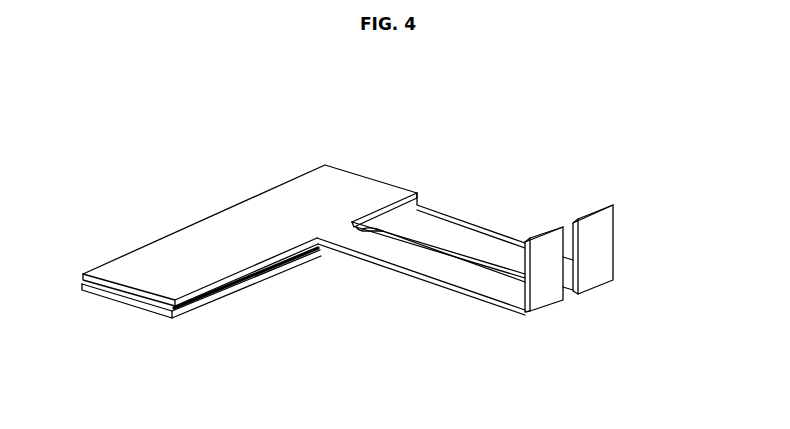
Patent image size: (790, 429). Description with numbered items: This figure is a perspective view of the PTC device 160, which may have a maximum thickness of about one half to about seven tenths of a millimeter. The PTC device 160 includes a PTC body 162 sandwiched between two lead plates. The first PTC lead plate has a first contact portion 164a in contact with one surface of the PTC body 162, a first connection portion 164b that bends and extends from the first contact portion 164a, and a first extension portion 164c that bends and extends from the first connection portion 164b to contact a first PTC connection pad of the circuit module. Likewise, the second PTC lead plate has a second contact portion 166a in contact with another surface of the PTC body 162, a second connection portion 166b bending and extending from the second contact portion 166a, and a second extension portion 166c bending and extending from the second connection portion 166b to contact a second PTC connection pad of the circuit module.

The PTC device 160 is at (597, 195).
The PTC body 162 is at (132, 298).
The first contact portion 164a is at (157, 317).
The first connection portion 164b is at (438, 225).
The first extension portion 164c is at (603, 231).
The second contact portion 166a is at (300, 187).
The second connection portion 166b is at (413, 263).
The second extension portion 166c is at (548, 248).